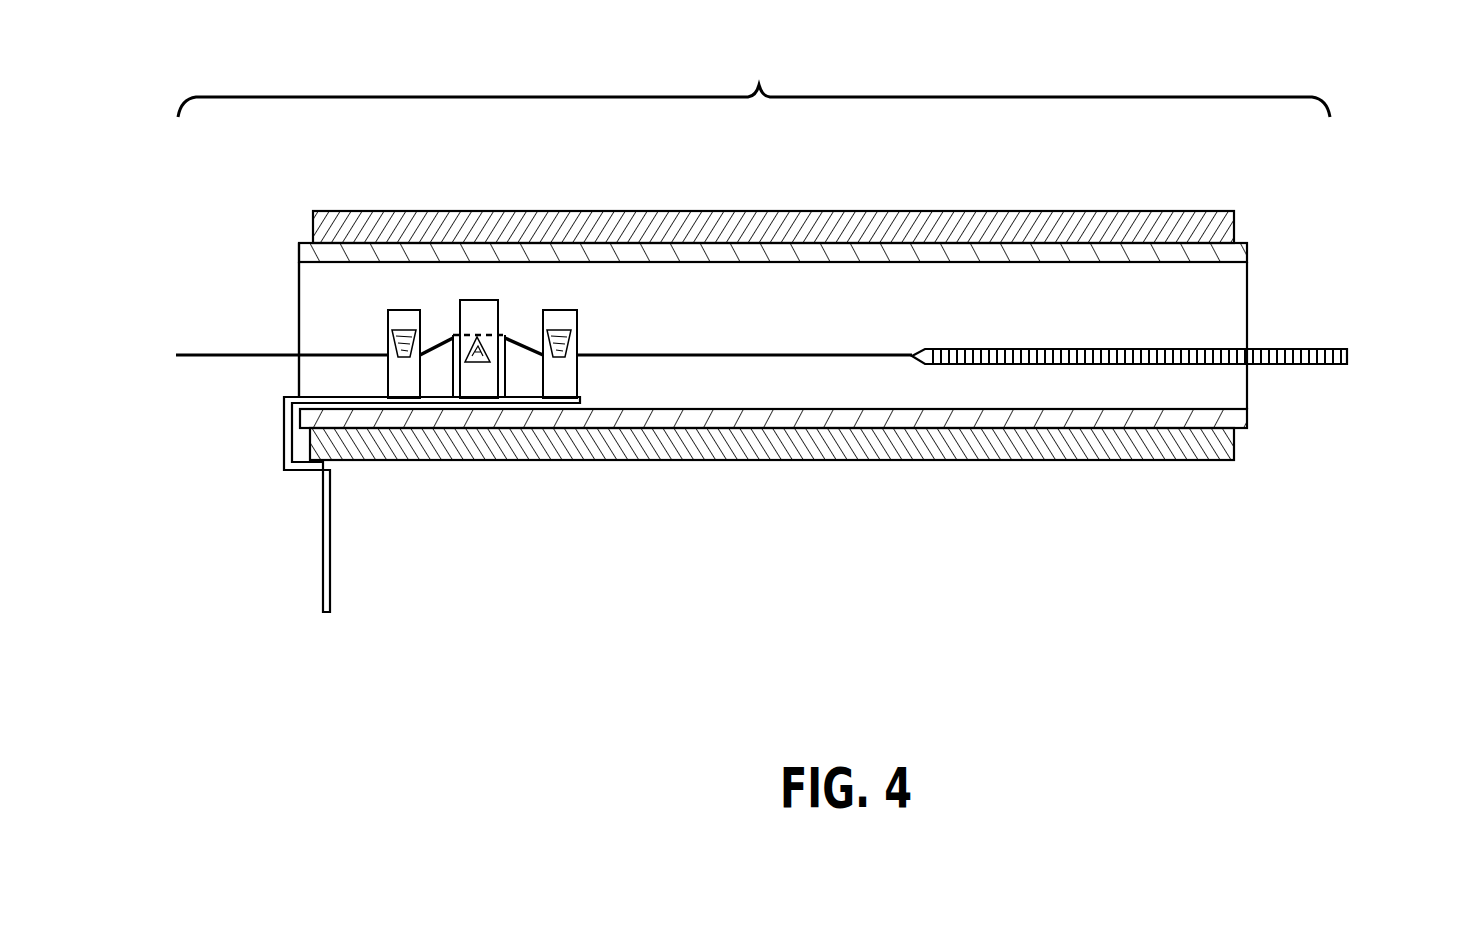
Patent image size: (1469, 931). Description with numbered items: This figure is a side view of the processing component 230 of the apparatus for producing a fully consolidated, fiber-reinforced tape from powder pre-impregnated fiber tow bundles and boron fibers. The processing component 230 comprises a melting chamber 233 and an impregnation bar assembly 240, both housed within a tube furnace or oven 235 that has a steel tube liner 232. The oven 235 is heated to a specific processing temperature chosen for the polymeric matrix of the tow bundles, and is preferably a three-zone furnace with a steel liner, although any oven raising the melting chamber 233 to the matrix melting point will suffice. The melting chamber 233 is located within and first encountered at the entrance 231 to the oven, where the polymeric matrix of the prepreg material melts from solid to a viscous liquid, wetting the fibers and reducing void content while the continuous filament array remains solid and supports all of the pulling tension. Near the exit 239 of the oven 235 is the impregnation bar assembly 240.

The processing component 230 is at (754, 77).
The entrance 231 is at (1247, 283).
The steel tube liner 232 is at (1248, 432).
The melting chamber 233 is at (1198, 325).
The tube furnace or oven 235 is at (930, 460).
The exit 239 is at (298, 308).
The impregnation bar assembly 240 is at (590, 427).